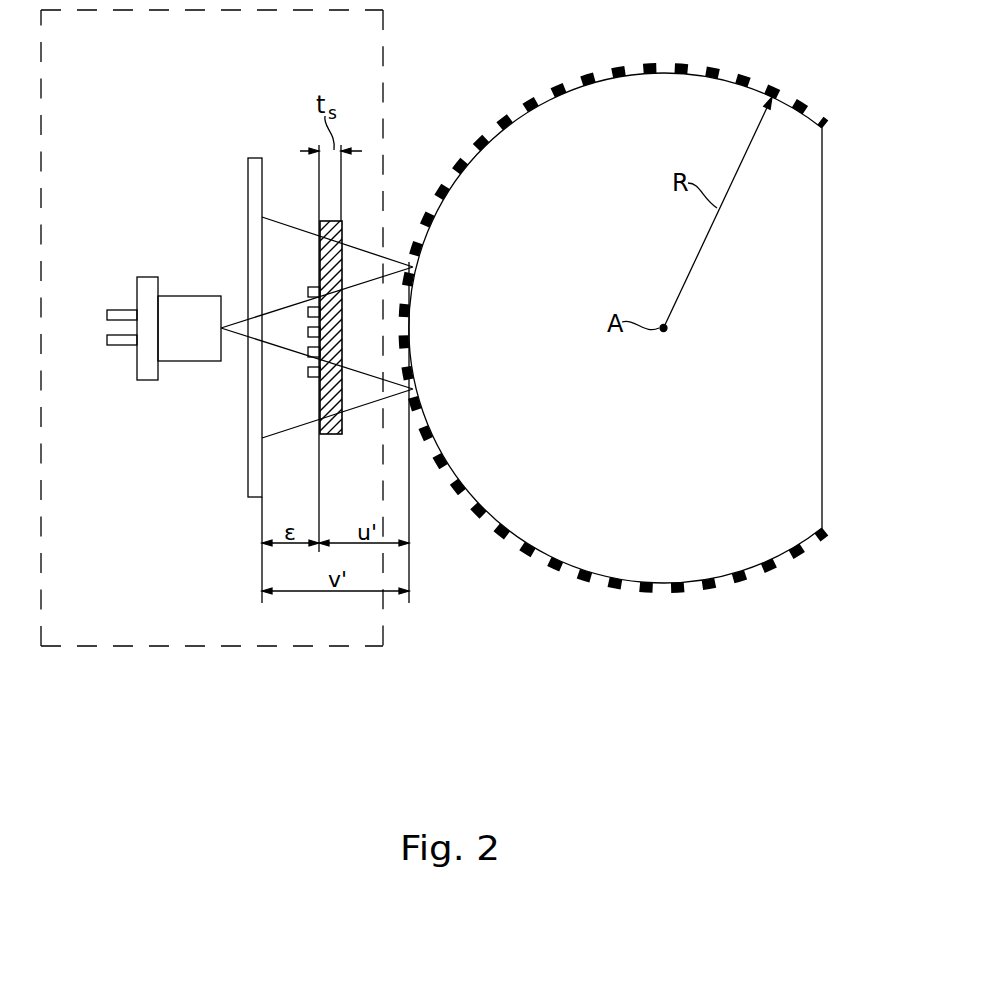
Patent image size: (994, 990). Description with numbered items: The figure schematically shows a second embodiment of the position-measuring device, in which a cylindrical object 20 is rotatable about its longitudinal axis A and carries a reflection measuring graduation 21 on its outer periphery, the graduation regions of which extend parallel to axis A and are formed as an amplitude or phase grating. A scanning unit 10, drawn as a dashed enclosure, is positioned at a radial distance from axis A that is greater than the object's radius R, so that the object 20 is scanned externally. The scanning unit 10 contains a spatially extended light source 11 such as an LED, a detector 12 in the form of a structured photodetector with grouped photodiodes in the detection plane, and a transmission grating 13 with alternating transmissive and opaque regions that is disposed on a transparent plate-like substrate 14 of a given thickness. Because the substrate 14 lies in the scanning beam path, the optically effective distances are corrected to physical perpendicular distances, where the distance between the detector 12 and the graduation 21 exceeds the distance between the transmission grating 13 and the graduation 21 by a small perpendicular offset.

The scanning unit 10 is at (155, 648).
The light source 11 is at (200, 296).
The detector 12 is at (256, 158).
The transmission grating 13 is at (310, 291).
The transparent plate-like substrate 14 is at (343, 233).
The object 20 is at (810, 164).
The reflection measuring graduation 21 is at (636, 68).